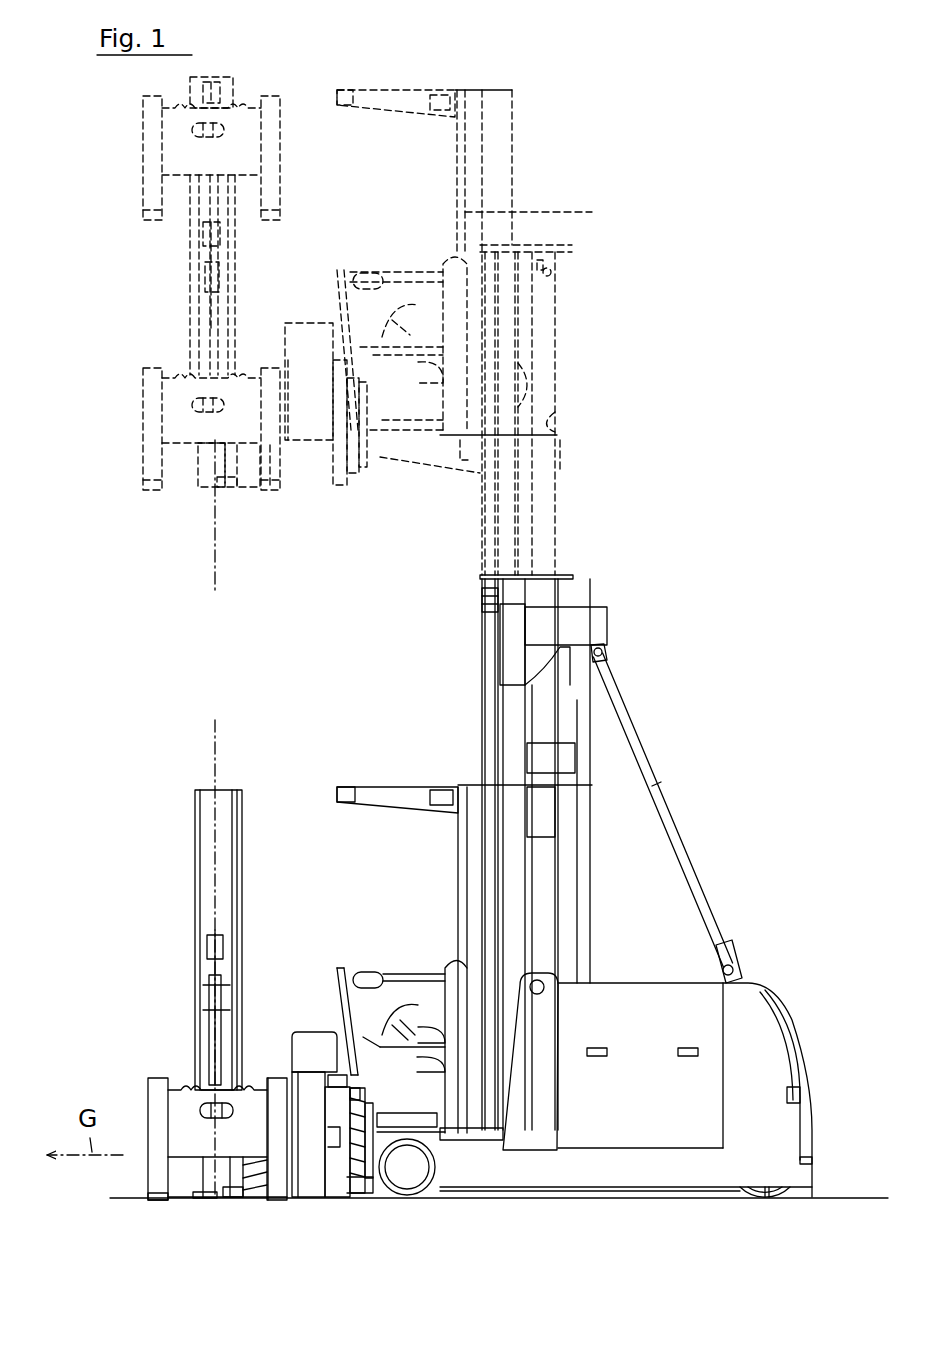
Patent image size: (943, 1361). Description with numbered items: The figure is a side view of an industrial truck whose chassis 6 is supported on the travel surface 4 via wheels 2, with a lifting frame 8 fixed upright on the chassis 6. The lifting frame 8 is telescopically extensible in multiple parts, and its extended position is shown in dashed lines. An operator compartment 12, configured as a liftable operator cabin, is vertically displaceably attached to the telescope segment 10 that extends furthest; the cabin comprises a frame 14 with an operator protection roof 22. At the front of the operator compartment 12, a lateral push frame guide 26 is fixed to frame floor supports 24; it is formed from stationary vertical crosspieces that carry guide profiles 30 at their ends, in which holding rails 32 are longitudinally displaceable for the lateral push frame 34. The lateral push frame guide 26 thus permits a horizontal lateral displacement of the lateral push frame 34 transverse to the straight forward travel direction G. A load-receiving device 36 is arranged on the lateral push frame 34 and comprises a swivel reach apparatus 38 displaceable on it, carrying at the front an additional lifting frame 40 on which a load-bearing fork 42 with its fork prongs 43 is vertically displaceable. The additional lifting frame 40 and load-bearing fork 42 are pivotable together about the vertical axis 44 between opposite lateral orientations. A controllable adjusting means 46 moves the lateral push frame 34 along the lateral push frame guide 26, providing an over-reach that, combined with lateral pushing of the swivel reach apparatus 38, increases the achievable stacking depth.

The wheels 2 is at (412, 1180).
The travel surface 4 is at (605, 1195).
The chassis 6 is at (600, 1010).
The lifting frame 8 is at (520, 480).
The telescope segment 10 is at (495, 165).
The operator compartment 12 is at (425, 262).
The frame 14 is at (548, 214).
The operator protection roof 22 is at (388, 90).
The frame floor supports 24 is at (420, 478).
The lateral push frame guide 26 is at (285, 425).
The guide profiles 30 is at (375, 462).
The holding rails 32 is at (335, 322).
The lateral push frame 34 is at (275, 470).
The load-receiving device 36 is at (275, 495).
The swivel reach apparatus 38 is at (218, 540).
The additional lifting frame 40 is at (205, 268).
The load-bearing fork 42 is at (150, 186).
The fork prongs 43 is at (260, 1200).
The vertical axis 44 is at (210, 528).
The controllable adjusting means 46 is at (358, 1130).